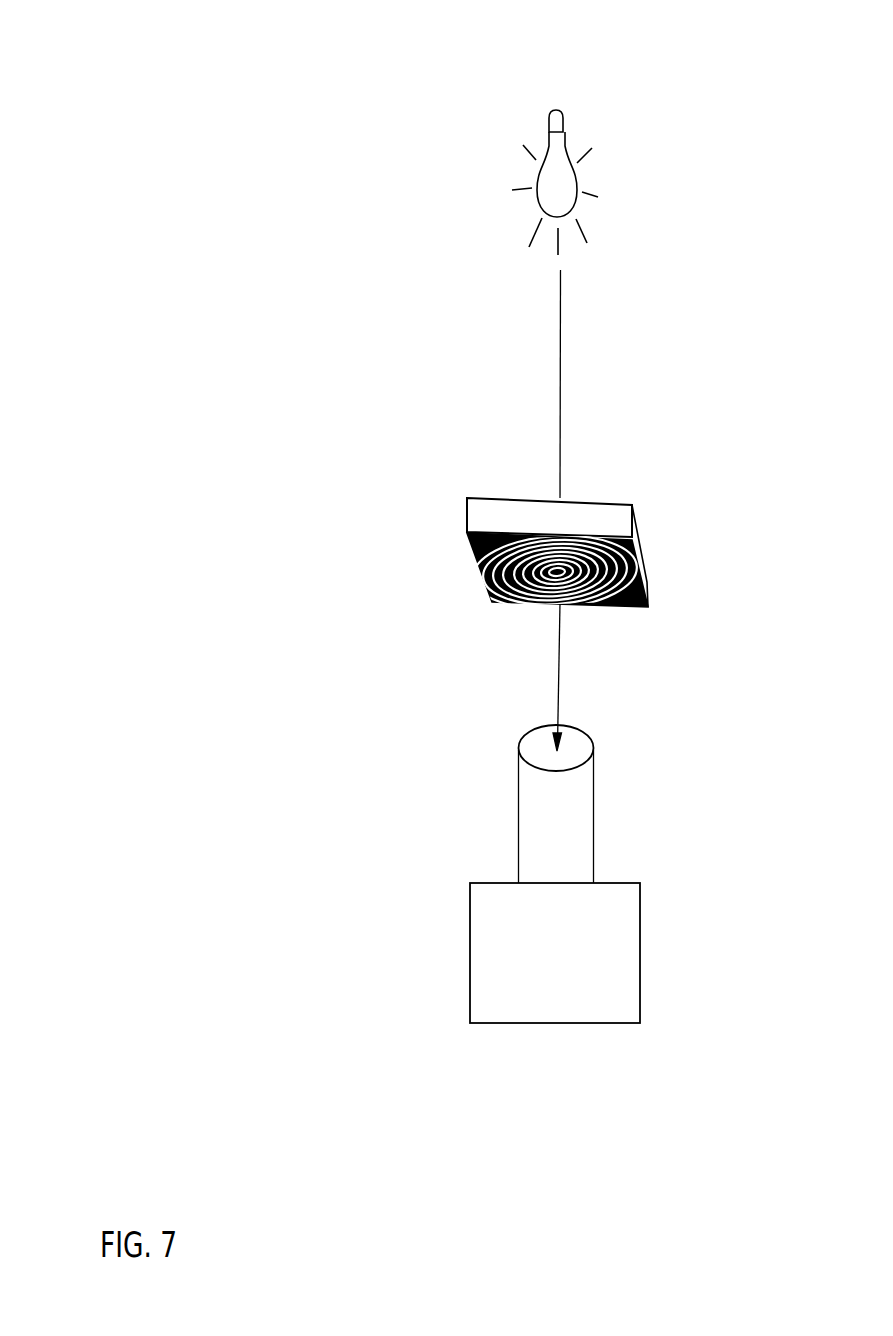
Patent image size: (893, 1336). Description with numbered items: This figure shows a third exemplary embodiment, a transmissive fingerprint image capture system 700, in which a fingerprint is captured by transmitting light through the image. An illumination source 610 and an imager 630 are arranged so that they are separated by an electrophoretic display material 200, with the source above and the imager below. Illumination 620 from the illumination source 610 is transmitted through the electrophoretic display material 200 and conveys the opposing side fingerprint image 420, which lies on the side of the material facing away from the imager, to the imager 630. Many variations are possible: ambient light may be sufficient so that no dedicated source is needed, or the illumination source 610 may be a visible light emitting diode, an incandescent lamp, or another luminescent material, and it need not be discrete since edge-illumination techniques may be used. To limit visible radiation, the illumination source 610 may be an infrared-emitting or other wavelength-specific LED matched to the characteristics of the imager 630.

The transmissive fingerprint image capture system 700 is at (150, 180).
The illumination source 610 is at (507, 140).
The illumination 620 is at (573, 510).
The electrophoretic display material 200 is at (607, 592).
The opposing side fingerprint image 420 is at (528, 632).
The imager 630 is at (510, 926).